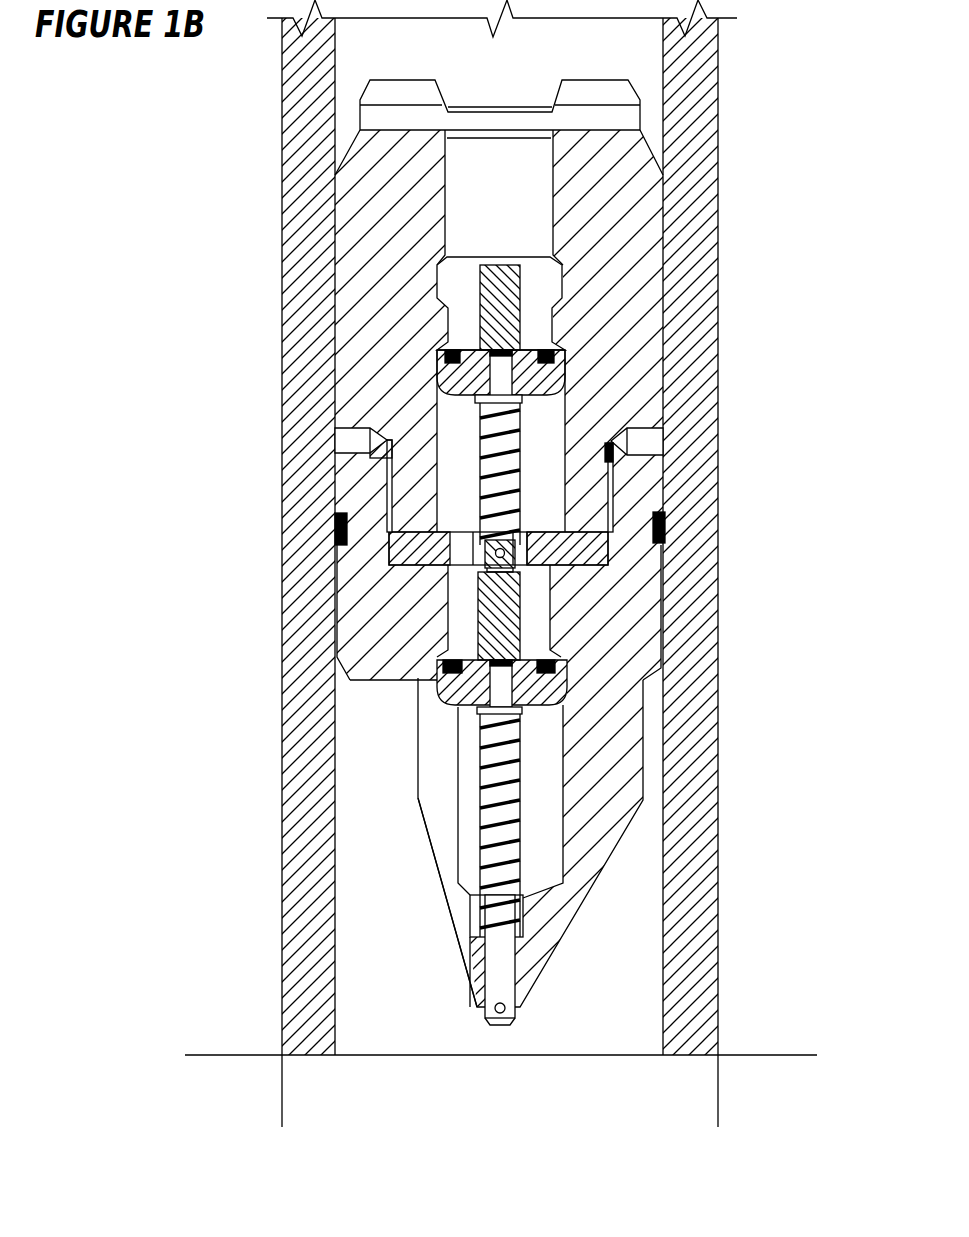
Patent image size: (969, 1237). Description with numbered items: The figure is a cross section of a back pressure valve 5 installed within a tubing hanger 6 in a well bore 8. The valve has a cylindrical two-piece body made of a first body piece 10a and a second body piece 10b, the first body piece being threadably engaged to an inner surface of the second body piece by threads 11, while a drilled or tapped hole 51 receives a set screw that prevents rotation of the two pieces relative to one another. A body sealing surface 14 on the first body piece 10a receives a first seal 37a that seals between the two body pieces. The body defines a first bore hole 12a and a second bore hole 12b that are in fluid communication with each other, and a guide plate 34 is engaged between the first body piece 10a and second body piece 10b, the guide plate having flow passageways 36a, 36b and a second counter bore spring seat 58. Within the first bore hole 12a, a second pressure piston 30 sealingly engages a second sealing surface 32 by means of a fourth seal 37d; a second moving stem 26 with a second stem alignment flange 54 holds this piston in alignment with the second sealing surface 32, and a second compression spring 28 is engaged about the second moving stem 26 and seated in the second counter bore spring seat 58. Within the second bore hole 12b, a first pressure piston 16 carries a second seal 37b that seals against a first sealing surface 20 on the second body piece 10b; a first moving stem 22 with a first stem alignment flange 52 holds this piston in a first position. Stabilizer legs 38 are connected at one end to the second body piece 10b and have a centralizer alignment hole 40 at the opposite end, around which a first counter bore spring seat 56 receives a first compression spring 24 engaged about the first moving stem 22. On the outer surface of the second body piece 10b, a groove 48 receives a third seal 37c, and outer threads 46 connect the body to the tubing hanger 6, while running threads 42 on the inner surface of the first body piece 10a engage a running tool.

The back pressure valve 5 is at (403, 930).
The tubing hanger 6 is at (718, 243).
The well bore 8 is at (718, 1095).
The first body piece 10a is at (648, 148).
The second body piece 10b is at (642, 580).
The threads 11 is at (613, 477).
The first bore hole 12a is at (524, 78).
The second bore hole 12b is at (560, 647).
The body sealing surface 14 is at (607, 445).
The first pressure piston 16 is at (458, 707).
The first sealing surface 20 is at (452, 658).
The first moving stem 22 is at (483, 788).
The first compression spring 24 is at (519, 770).
The second moving stem 26 is at (485, 486).
The second compression spring 28 is at (521, 441).
The second pressure piston 30 is at (462, 280).
The second sealing surface 32 is at (548, 365).
The guide plate 34 is at (540, 548).
The flow passageway 36a is at (461, 526).
The flow passageway 36b is at (541, 526).
The first seal 37a is at (605, 450).
The second seal 37b is at (560, 667).
The third seal 37c is at (335, 530).
The fourth seal 37d is at (445, 357).
The stabilizer leg 38 is at (603, 872).
The centralizer alignment hole 40 is at (517, 977).
The running threads 42 is at (449, 165).
The outer threads 46 is at (337, 603).
The groove 48 is at (658, 507).
The drilled or tapped hole 51 is at (326, 433).
The first stem alignment flange 52 is at (477, 710).
The second stem alignment flange 54 is at (471, 404).
The first counter bore spring seat 56 is at (521, 912).
The second counter bore spring seat 58 is at (480, 540).